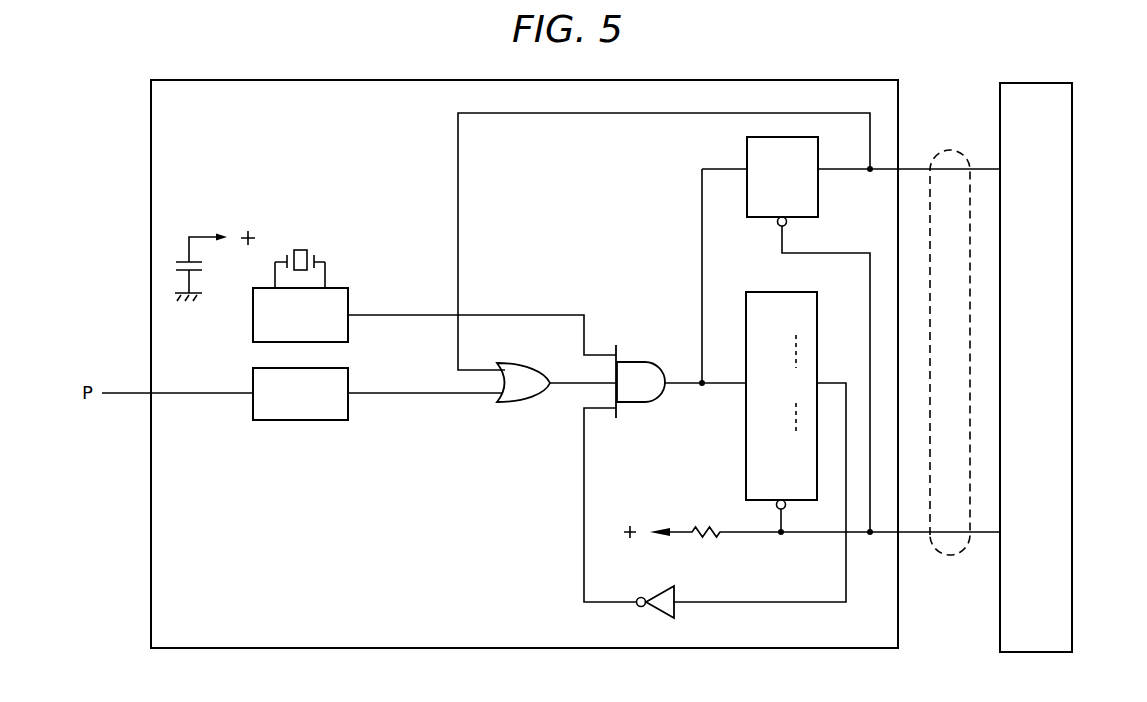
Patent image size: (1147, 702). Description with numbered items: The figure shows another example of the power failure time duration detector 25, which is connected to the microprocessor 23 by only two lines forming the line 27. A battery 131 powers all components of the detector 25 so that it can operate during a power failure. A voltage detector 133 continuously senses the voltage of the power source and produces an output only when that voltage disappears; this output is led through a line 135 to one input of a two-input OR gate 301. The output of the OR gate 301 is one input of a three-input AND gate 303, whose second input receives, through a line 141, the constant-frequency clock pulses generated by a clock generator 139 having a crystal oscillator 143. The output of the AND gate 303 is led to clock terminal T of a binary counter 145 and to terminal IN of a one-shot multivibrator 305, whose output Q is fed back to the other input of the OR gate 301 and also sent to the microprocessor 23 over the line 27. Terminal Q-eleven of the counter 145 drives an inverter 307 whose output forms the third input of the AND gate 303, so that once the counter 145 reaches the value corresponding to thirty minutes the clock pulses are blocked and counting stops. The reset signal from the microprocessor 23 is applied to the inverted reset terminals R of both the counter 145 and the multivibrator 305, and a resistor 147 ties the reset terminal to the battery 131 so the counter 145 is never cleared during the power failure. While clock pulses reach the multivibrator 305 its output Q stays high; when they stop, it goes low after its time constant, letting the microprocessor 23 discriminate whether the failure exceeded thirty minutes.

The microprocessor 23 is at (1072, 580).
The power failure time duration detector 25 is at (442, 648).
The line 27 is at (948, 556).
The battery 131 is at (202, 267).
The voltage detector 133 is at (297, 421).
The line 135 is at (390, 394).
The clock generator 139 is at (348, 292).
The line 141 is at (393, 315).
The crystal oscillator 143 is at (303, 249).
The binary counter 145 is at (746, 458).
The resistor 147 is at (710, 538).
The two-input OR gate 301 is at (518, 403).
The three-input AND gate 303 is at (640, 362).
The one-shot multivibrator 305 is at (747, 148).
The inverter 307 is at (660, 616).